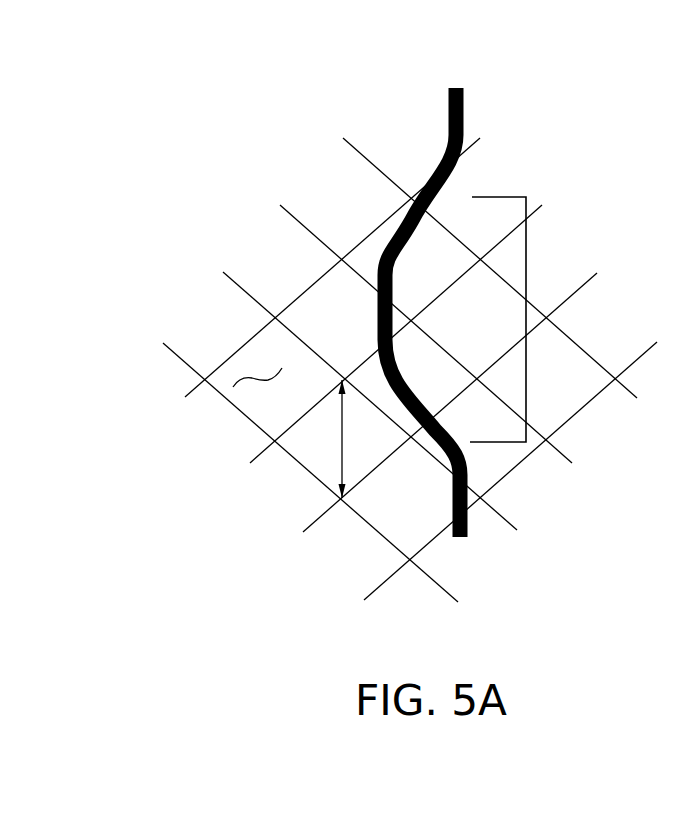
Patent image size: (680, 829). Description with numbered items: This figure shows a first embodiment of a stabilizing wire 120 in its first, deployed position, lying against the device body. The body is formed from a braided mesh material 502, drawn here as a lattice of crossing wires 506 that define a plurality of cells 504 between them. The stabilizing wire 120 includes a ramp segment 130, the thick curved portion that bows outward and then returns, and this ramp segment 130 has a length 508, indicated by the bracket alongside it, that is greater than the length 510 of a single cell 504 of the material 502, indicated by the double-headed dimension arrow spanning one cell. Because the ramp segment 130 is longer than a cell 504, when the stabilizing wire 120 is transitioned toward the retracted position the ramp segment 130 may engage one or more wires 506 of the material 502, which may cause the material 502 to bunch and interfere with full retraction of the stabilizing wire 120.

The stabilizing wire 120 is at (528, 136).
The ramp segment 130 is at (362, 242).
The braided mesh material 502 is at (160, 378).
The cell 504 is at (260, 377).
The wire 506 is at (276, 317).
The length of ramp segment 508 is at (526, 280).
The length of cell 510 is at (342, 441).